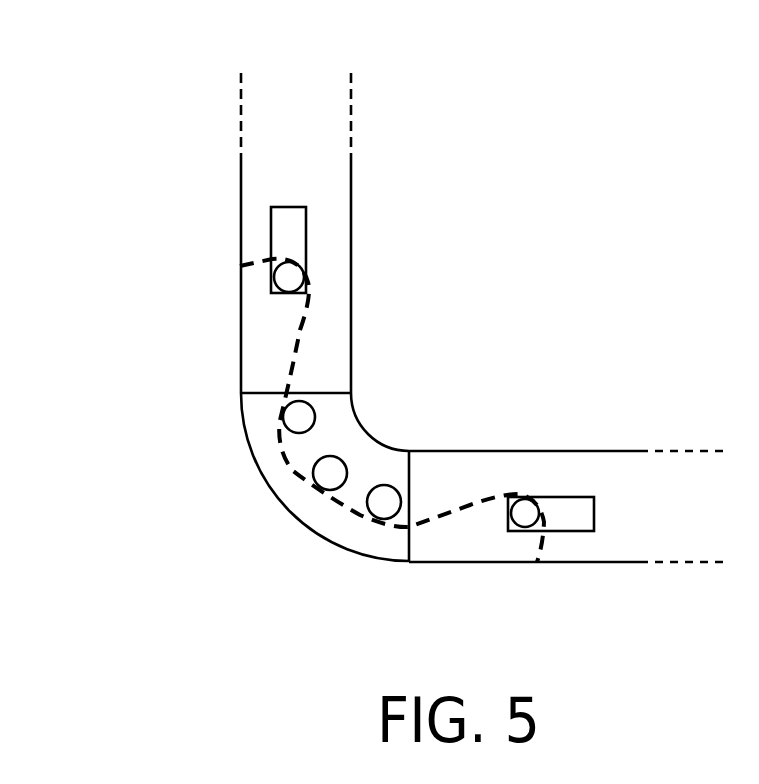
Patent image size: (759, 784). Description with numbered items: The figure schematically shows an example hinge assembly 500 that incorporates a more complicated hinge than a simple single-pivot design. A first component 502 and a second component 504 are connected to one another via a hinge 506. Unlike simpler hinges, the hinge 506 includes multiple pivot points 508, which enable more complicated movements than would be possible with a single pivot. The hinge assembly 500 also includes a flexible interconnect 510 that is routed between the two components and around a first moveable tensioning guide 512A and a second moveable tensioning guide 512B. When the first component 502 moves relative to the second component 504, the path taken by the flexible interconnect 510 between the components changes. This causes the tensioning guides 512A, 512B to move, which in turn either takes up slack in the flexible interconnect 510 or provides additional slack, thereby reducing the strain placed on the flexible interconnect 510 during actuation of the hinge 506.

The hinge assembly 500 is at (145, 61).
The first component 502 is at (351, 215).
The second component 504 is at (475, 450).
The hinge 506 is at (372, 428).
The pivot points 508 is at (367, 503).
The flexible interconnect 510 is at (495, 492).
The first moveable tensioning guide 512A is at (273, 277).
The second moveable tensioning guide 512B is at (505, 513).